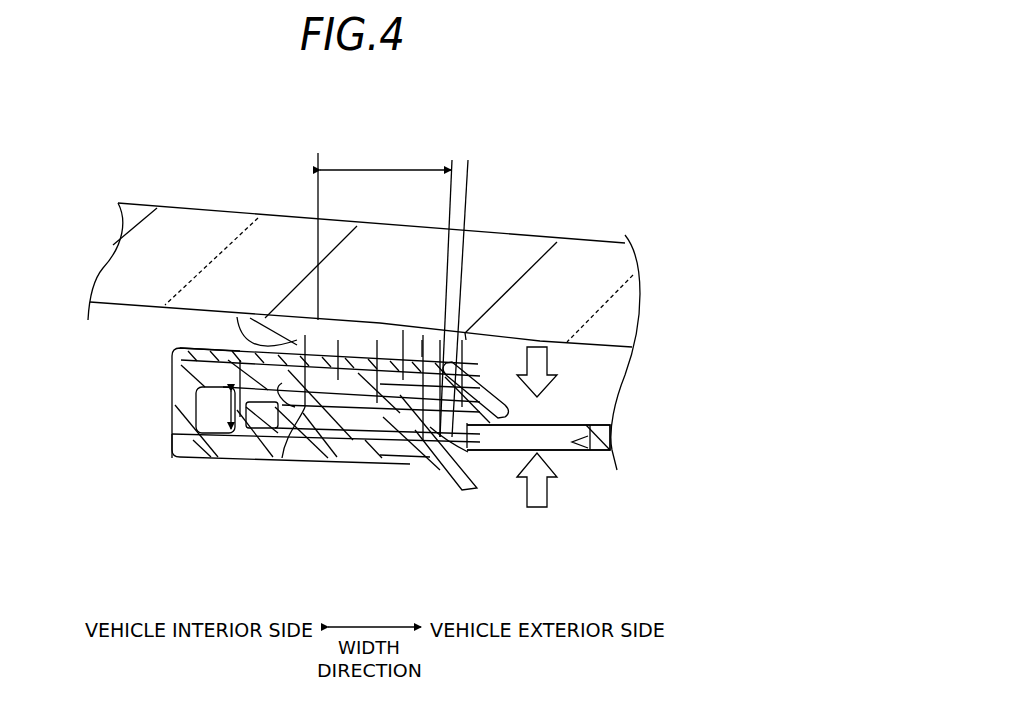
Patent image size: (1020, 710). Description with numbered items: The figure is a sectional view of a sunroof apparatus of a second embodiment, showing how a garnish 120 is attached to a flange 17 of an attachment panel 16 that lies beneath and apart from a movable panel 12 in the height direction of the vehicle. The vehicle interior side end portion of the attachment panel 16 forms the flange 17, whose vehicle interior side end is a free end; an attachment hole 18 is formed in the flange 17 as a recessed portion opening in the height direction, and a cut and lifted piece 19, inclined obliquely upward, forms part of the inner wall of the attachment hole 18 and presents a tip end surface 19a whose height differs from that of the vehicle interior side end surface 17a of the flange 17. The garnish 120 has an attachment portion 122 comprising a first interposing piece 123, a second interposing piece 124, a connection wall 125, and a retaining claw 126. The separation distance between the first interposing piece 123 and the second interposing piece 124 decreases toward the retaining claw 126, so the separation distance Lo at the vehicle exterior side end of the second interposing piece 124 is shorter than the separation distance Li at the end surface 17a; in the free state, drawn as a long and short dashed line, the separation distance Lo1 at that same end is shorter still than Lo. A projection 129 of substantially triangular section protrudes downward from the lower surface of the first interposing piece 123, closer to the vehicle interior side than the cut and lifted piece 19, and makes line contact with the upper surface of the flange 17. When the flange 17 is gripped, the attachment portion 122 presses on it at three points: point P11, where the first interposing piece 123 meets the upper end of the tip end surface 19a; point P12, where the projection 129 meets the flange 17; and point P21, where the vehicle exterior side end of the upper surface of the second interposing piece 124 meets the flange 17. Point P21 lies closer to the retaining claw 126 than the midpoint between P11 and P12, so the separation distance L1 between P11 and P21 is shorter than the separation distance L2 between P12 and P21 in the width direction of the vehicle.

The movable panel 12 is at (598, 258).
The attachment panel 16 is at (538, 437).
The flange 17 is at (593, 453).
The vehicle interior side end surface 17a is at (237, 347).
The attachment hole 18 is at (567, 453).
The cut and lifted piece 19 is at (378, 365).
The tip end surface 19a is at (467, 370).
The garnish 120 is at (316, 500).
The attachment portion 122 is at (172, 400).
The first interposing piece 123 is at (338, 380).
The second interposing piece 124 is at (393, 460).
The connection wall 125 is at (177, 440).
The retaining claw 126 is at (512, 423).
The projection 129 is at (297, 340).
The separation distance L1 is at (464, 165).
The separation distance L2 is at (376, 160).
The separation distance Li is at (226, 410).
The separation distance Lo is at (422, 357).
The separation distance Lo1 is at (468, 450).
The point P11 is at (465, 333).
The point P12 is at (282, 458).
The point P21 is at (423, 463).